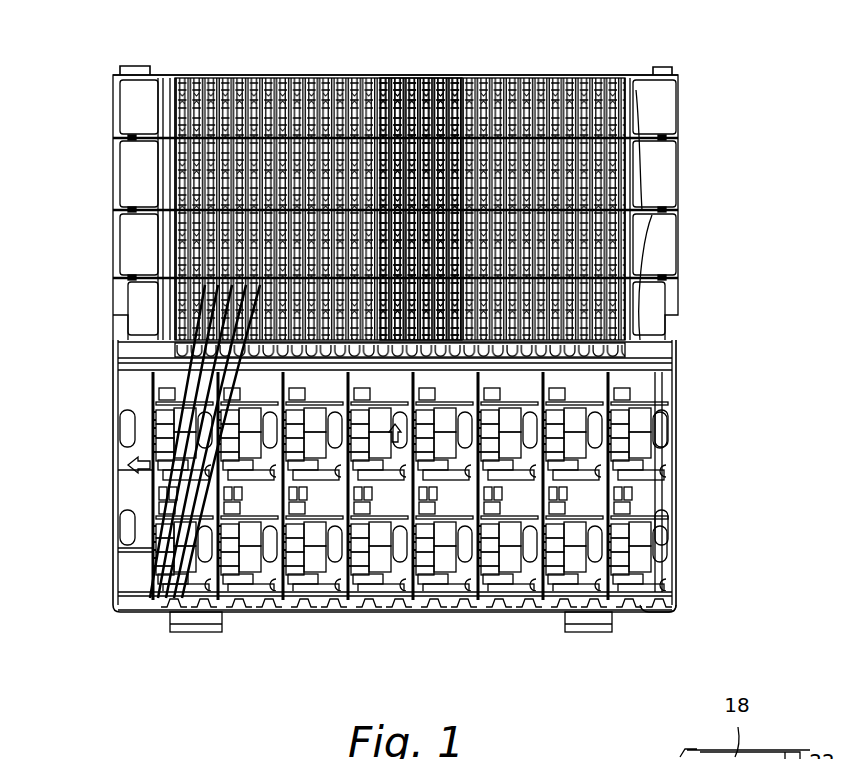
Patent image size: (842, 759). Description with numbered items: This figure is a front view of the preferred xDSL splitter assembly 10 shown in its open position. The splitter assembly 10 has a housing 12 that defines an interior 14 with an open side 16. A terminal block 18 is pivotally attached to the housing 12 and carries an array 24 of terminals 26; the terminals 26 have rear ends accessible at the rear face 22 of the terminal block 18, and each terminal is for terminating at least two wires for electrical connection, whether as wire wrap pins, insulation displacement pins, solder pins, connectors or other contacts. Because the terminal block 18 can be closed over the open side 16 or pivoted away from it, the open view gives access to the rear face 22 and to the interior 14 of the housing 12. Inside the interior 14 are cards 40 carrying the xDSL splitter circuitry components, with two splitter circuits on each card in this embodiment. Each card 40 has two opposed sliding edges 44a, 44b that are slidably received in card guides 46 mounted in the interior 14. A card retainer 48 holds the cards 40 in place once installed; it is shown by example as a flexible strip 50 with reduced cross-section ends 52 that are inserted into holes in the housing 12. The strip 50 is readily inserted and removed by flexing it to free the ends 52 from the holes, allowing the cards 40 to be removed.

The xDSL splitter assembly 10 is at (98, 520).
The housing 12 is at (680, 560).
The interior 14 is at (660, 457).
The open side 16 is at (470, 613).
The terminal block 18 is at (609, 78).
The rear face 22 is at (524, 78).
The array 24 is at (652, 222).
The terminals 26 is at (382, 76).
The cards 40 is at (283, 570).
The sliding edge 44a is at (300, 604).
The sliding edge 44b is at (334, 603).
The card guides 46 is at (353, 600).
The card retainer 48 is at (530, 590).
The flexible strip 50 is at (622, 598).
The reduced cross-section ends 52 is at (668, 612).